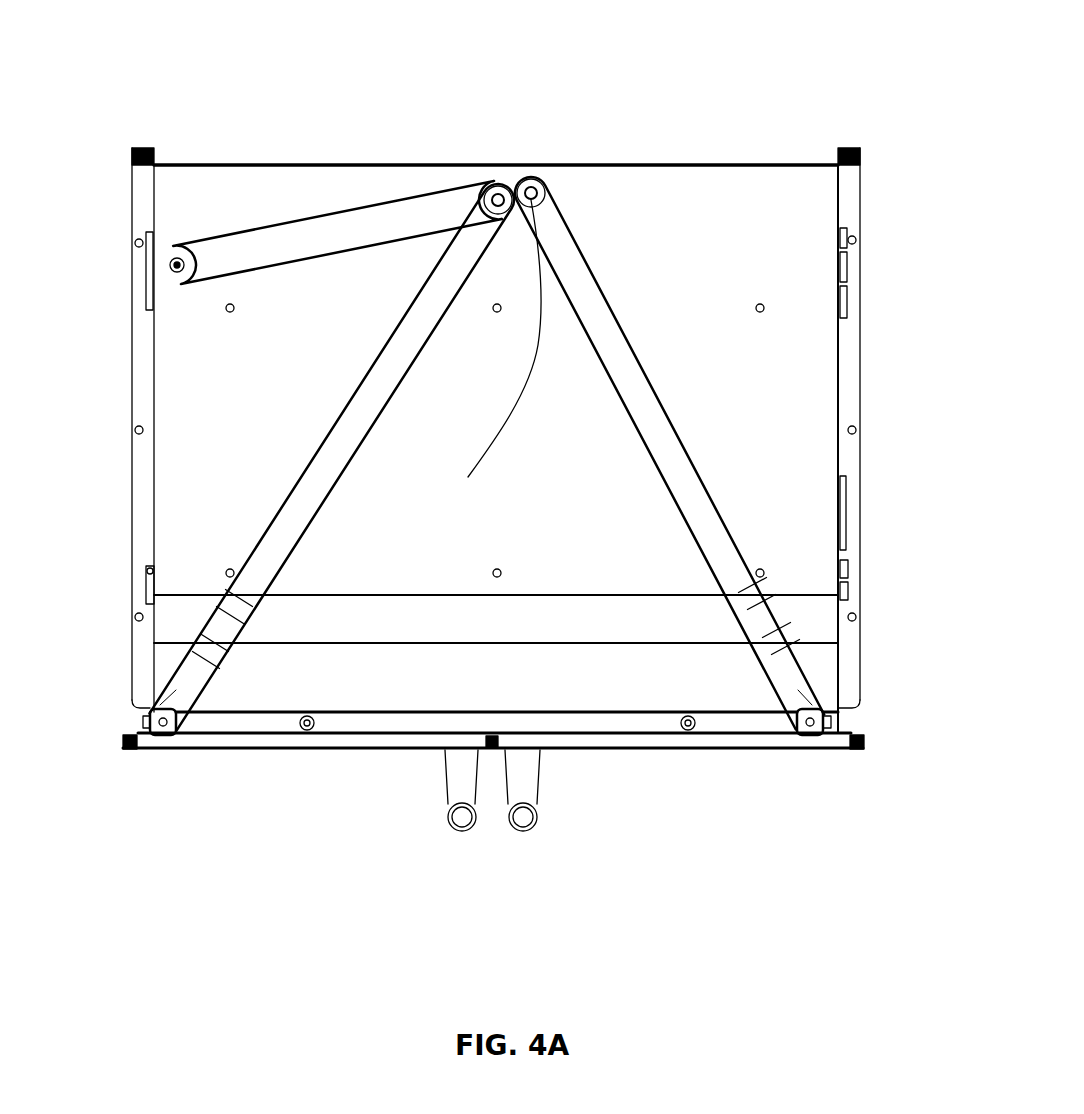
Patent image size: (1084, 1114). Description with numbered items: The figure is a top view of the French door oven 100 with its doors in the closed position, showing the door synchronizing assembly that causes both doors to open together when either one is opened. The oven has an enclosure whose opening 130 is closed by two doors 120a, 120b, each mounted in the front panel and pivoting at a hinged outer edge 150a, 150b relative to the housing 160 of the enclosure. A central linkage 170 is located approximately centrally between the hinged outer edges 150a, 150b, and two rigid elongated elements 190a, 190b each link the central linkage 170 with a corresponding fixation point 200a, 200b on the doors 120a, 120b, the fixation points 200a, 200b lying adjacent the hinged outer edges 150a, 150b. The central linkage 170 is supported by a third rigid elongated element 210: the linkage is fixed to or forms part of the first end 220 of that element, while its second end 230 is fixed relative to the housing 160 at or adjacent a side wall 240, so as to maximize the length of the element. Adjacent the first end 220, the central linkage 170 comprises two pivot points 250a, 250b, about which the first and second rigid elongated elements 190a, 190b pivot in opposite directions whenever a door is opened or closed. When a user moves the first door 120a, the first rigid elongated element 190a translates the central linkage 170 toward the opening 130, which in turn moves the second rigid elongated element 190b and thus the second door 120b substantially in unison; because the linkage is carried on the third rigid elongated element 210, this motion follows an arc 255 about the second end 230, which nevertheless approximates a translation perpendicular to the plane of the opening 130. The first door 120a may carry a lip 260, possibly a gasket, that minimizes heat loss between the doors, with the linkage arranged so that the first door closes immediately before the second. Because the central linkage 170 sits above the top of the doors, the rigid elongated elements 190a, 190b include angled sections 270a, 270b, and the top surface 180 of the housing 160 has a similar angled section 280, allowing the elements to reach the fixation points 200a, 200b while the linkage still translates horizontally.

The French door oven 100 is at (818, 36).
The first door 120a is at (305, 742).
The second door 120b is at (619, 752).
The opening 130 is at (721, 722).
The hinged outer edge of first door 150a is at (124, 750).
The hinged outer edge of second door 150b is at (868, 745).
The housing 160 is at (850, 468).
The central linkage 170 is at (524, 183).
The top surface 180 is at (318, 188).
The first rigid elongated element 190a is at (310, 466).
The second rigid elongated element 190b is at (656, 392).
The fixation point on first door 200a is at (178, 712).
The fixation point on second door 200b is at (812, 736).
The third rigid elongated element 210 is at (272, 237).
The first end of third rigid elongated element 220 is at (490, 183).
The second end of third rigid elongated element 230 is at (172, 250).
The side wall 240 is at (130, 365).
The first pivot point 250a is at (484, 185).
The second pivot point 250b is at (541, 182).
The arc 255 is at (540, 322).
The lip 260 is at (492, 740).
The angled section of first rigid elongated element 270a is at (228, 612).
The angled section of second rigid elongated element 270b is at (765, 625).
The angled section of top surface 280 is at (170, 620).